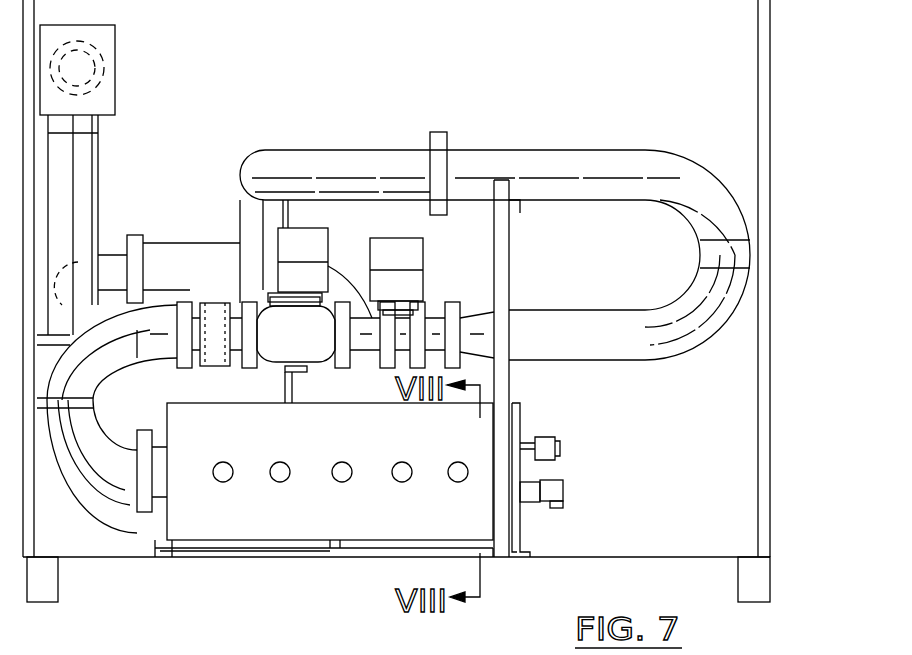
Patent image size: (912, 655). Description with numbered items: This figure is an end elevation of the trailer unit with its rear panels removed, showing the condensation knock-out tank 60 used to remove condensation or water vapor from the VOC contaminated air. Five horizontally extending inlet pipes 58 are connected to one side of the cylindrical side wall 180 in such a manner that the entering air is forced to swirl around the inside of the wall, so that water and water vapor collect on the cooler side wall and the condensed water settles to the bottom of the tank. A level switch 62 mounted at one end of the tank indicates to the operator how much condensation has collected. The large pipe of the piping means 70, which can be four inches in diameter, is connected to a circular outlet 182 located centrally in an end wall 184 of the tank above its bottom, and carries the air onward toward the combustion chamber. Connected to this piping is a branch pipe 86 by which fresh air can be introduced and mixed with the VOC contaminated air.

The branch pipe 86 is at (98, 188).
The piping means 70 is at (588, 361).
The inlet pipes 58 is at (458, 462).
The condensation knock-out tank 60 is at (445, 528).
The cylindrical side wall 180 is at (370, 505).
The circular outlet 182 is at (158, 478).
The end wall 184 is at (158, 522).
The level switch 62 is at (565, 494).